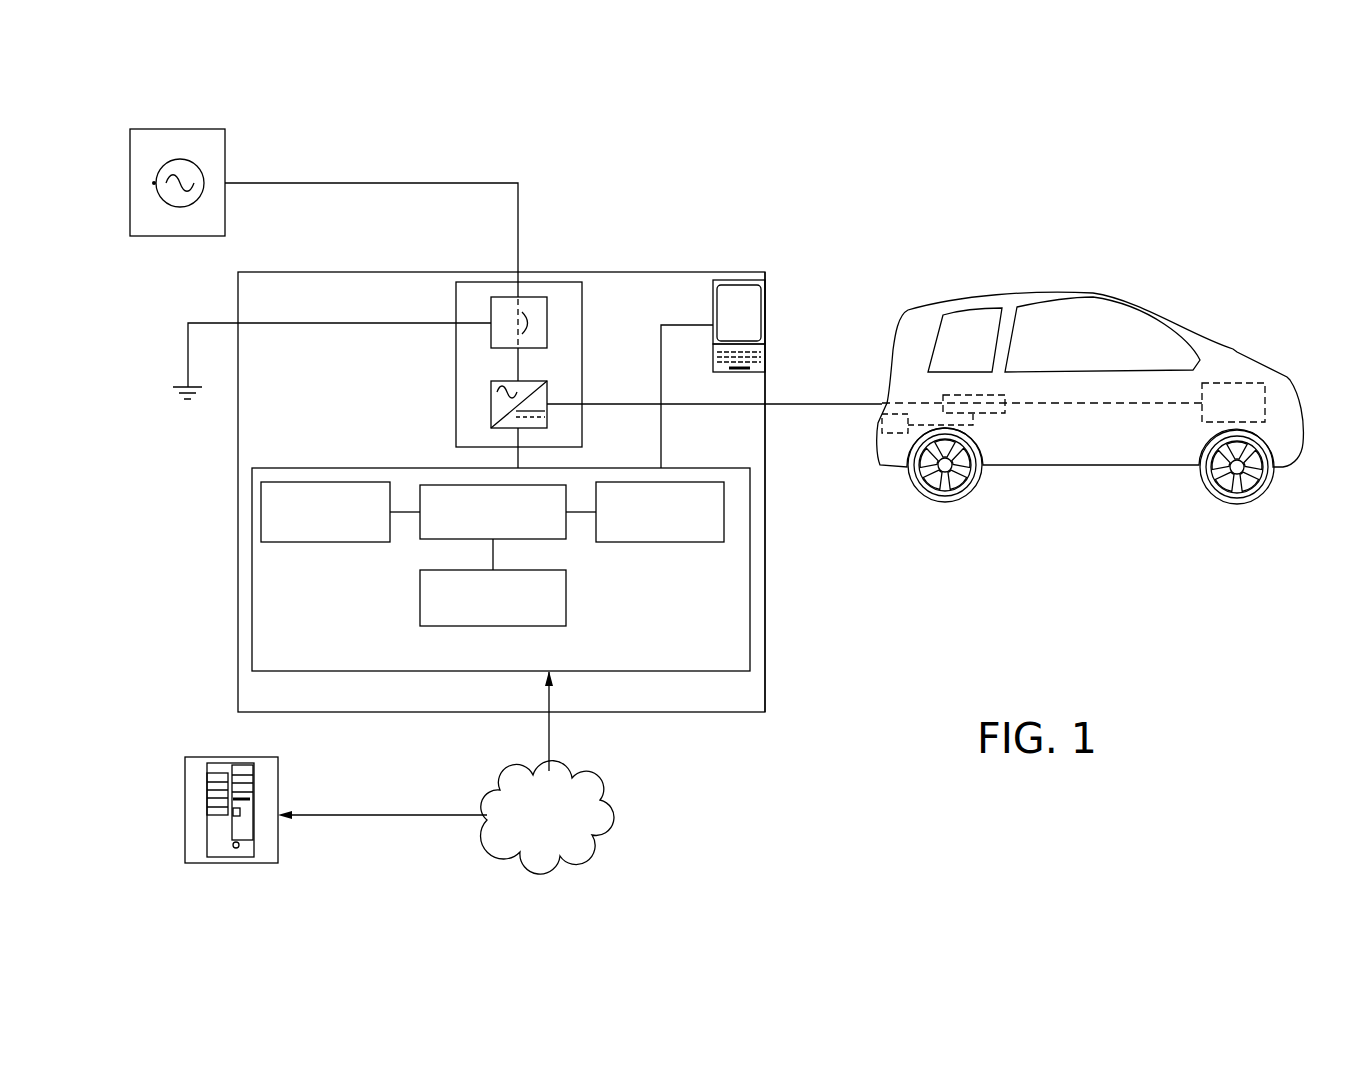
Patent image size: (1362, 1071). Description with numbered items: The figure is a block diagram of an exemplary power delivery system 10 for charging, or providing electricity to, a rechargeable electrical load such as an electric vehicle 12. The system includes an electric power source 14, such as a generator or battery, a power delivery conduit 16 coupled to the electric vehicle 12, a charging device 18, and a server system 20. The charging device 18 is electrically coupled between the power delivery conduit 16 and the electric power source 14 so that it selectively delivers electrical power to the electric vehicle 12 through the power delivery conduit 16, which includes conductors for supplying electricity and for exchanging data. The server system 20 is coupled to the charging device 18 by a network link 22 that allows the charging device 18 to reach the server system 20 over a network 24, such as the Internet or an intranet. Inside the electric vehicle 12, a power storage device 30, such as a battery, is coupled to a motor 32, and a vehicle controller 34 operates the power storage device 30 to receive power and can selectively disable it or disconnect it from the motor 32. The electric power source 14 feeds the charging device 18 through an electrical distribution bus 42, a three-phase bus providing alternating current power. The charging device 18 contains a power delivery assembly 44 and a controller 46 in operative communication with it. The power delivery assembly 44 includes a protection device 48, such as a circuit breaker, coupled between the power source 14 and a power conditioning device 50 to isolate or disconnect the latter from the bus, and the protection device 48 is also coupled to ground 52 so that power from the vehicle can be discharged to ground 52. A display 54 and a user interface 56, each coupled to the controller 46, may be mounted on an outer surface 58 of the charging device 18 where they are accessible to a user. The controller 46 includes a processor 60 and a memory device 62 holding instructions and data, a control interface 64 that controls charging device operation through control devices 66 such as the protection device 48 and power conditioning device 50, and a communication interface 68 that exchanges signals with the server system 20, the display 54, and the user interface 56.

The power delivery system 10 is at (749, 155).
The electric vehicle 12 is at (1085, 250).
The electric power source 14 is at (226, 135).
The power delivery conduit 16 is at (827, 404).
The charging device 18 is at (641, 271).
The server system 20 is at (185, 787).
The network link 22 is at (550, 732).
The network 24 is at (607, 810).
The power storage device 30 is at (1000, 413).
The motor 32 is at (1233, 383).
The vehicle controller 34 is at (888, 438).
The electrical distribution bus 42 is at (449, 183).
The power delivery assembly 44 is at (534, 282).
The controller 46 is at (750, 553).
The protection device 48 is at (496, 297).
The power conditioning device 50 is at (490, 407).
The ground 52 is at (175, 353).
The display 54 is at (742, 280).
The user interface 56 is at (747, 373).
The outer surface 58 is at (767, 440).
The processor 60 is at (517, 539).
The memory device 62 is at (420, 598).
The control interface 64 is at (343, 542).
The control devices 66 is at (456, 362).
The communication interface 68 is at (642, 542).